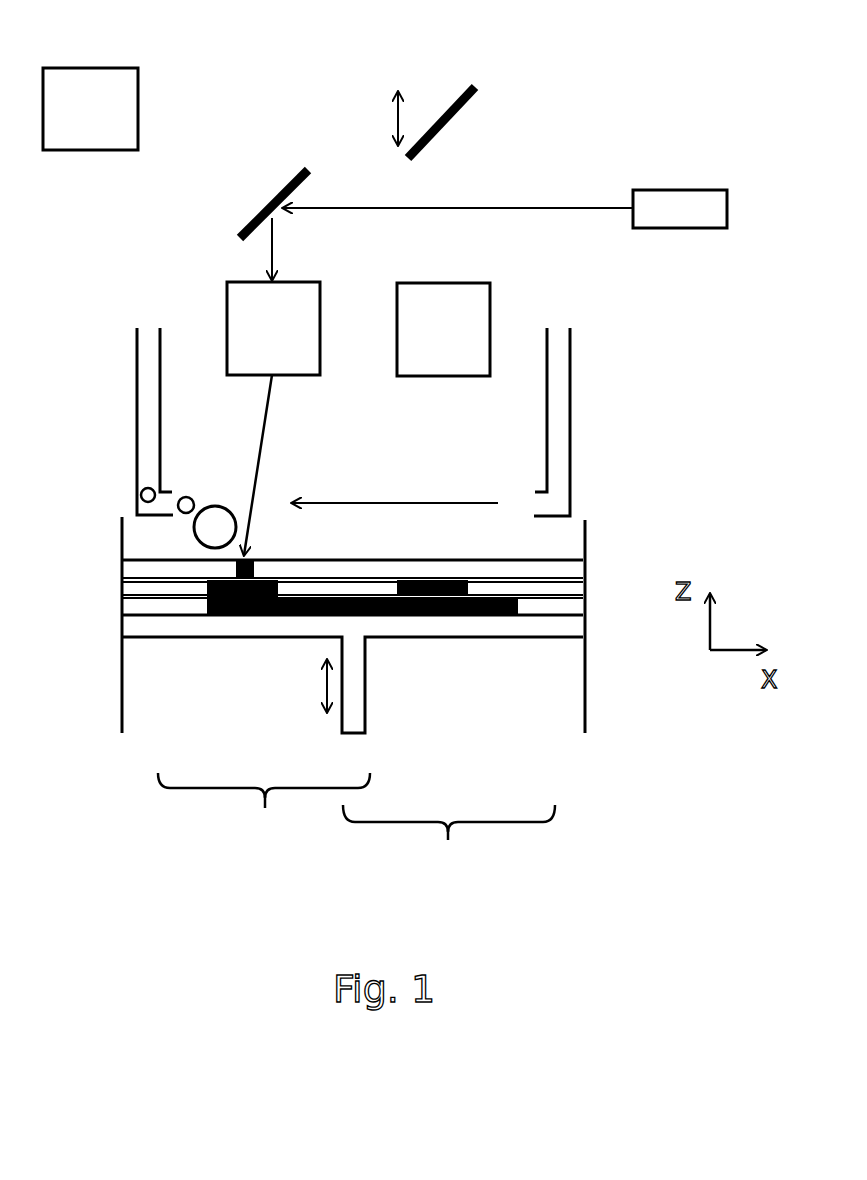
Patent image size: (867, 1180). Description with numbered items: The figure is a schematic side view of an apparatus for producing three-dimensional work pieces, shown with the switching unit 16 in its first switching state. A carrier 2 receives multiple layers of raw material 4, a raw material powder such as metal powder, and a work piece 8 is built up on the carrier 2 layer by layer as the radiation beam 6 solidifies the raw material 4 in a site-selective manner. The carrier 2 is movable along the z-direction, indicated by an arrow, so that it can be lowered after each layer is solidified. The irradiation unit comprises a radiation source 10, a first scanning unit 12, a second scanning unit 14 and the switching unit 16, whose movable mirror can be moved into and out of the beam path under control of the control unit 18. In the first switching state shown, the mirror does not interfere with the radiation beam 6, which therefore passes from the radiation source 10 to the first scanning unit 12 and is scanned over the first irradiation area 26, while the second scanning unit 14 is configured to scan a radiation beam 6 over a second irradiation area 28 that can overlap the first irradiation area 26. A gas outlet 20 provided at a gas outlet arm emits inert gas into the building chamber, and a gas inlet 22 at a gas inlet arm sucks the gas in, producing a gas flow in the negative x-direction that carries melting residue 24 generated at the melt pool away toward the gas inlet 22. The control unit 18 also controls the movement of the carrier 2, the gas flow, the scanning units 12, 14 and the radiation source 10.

The carrier 2 is at (443, 639).
The raw material 4 is at (586, 567).
The radiation beam 6 is at (526, 206).
The work piece 8 is at (215, 617).
The radiation source 10 is at (680, 209).
The first scanning unit 12 is at (273, 328).
The second scanning unit 14 is at (443, 329).
The switching unit 16 is at (350, 55).
The control unit 18 is at (90, 109).
The gas outlet 20 is at (532, 505).
The gas inlet 22 is at (165, 497).
The melting residue 24 is at (210, 505).
The first irradiation area 26 is at (264, 805).
The second irradiation area 28 is at (449, 841).